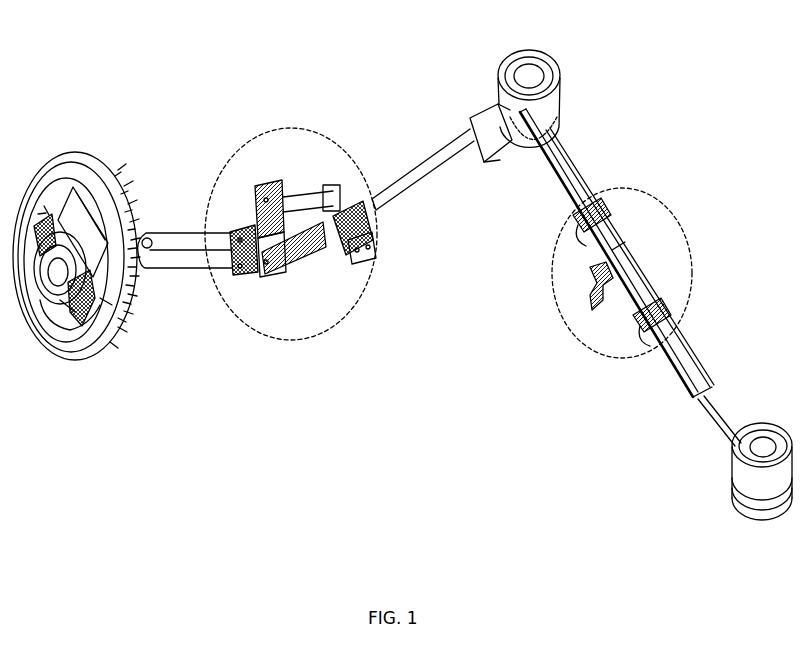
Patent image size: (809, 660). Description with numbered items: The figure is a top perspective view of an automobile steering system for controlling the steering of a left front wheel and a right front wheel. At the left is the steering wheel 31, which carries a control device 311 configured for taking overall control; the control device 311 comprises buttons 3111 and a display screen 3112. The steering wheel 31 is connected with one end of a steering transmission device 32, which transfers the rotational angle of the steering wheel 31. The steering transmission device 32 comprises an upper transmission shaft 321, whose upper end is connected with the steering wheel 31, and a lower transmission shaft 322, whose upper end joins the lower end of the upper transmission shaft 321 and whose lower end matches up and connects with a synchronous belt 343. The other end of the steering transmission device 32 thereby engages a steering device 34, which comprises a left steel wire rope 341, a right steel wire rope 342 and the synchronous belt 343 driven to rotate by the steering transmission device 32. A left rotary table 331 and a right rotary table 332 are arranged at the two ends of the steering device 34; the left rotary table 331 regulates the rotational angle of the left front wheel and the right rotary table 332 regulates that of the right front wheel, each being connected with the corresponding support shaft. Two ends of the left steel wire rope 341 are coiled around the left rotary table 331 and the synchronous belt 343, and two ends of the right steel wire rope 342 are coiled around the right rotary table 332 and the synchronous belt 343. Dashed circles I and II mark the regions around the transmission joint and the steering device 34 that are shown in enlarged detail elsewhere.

The steering wheel 31 is at (96, 170).
The control device 311 is at (160, 407).
The buttons 3111 is at (76, 343).
The display screen 3112 is at (106, 347).
The upper transmission shaft 321 is at (196, 270).
The steering transmission device 32 is at (382, 282).
The lower transmission shaft 322 is at (397, 195).
The left steel wire rope 341 is at (503, 152).
The left rotary table 331 is at (535, 50).
The synchronous belt 343 is at (572, 163).
The steering device 34 is at (605, 372).
The right steel wire rope 342 is at (722, 437).
The right rotary table 332 is at (748, 518).
The detail region I is at (328, 331).
The detail region II is at (663, 200).